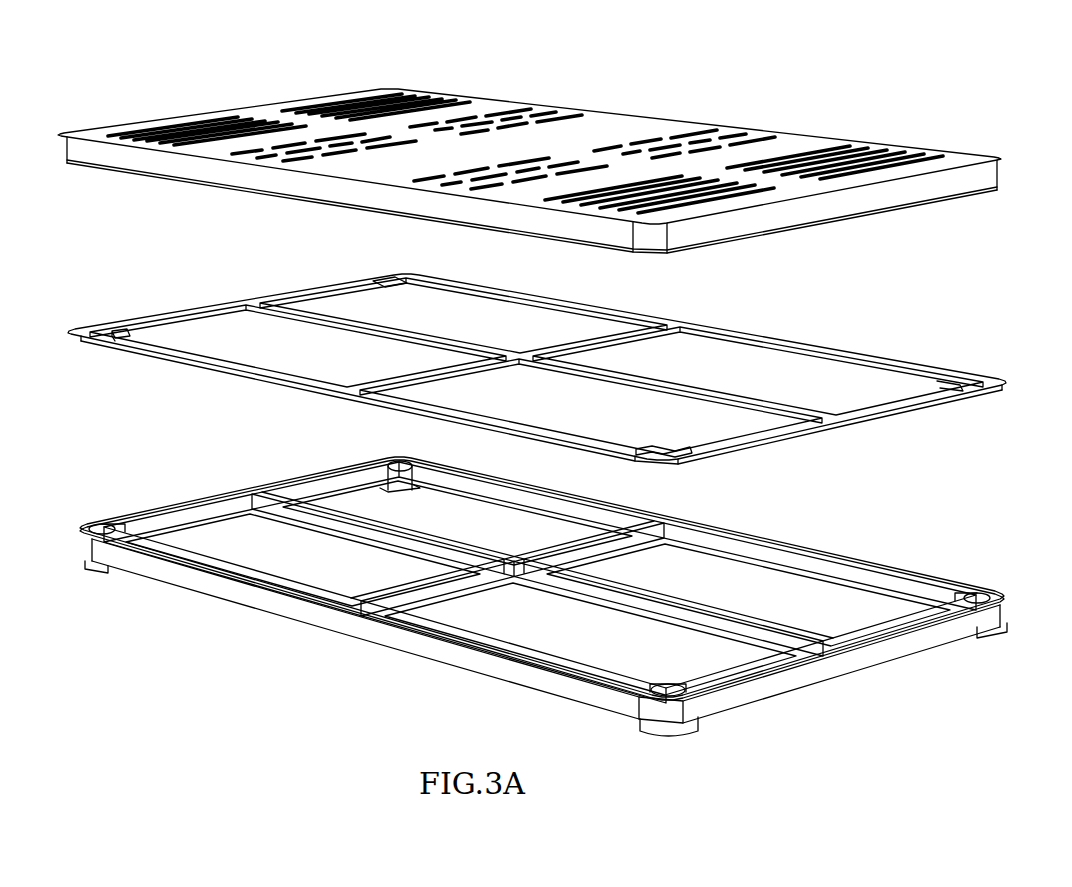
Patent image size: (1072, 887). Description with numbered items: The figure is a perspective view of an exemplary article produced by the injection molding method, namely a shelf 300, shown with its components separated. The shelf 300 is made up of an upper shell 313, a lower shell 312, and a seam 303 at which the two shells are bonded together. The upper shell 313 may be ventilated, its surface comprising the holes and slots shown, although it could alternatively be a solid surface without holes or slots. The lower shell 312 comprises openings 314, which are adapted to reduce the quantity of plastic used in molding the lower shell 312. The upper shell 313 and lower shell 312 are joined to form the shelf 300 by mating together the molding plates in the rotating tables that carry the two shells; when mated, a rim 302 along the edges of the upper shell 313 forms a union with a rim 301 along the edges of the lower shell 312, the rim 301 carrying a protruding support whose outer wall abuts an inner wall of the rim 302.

The shelf 300 is at (927, 85).
The rim 301 is at (296, 494).
The rim 302 is at (138, 175).
The seam 303 is at (882, 353).
The lower shell 312 is at (942, 635).
The upper shell 313 is at (617, 123).
The openings 314 is at (796, 596).